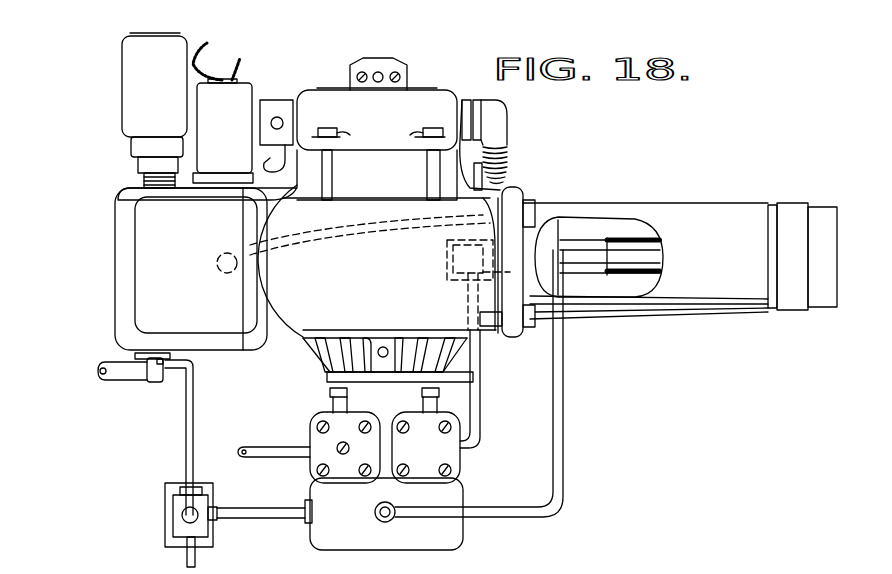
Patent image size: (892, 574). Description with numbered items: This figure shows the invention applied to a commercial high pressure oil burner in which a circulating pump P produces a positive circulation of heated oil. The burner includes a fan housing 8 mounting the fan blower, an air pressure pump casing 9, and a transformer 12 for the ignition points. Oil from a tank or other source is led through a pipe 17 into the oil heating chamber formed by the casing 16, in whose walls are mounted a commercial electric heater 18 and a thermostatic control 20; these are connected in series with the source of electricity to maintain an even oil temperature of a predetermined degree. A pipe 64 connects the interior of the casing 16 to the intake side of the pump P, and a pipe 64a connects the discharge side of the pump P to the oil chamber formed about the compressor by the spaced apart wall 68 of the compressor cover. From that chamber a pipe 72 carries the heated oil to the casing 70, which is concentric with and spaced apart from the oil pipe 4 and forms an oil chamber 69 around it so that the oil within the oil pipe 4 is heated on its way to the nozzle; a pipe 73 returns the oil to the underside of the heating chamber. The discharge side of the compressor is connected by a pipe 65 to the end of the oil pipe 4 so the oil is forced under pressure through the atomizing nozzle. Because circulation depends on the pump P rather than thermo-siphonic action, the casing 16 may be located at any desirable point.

The thermostatic control 20 is at (128, 82).
The electric heater 18 is at (243, 92).
The casing 16 is at (117, 257).
The transformer 12 is at (196, 265).
The fan housing 8 is at (323, 310).
The pipe 73 is at (338, 233).
The air pressure pump casing 9 is at (323, 363).
The casing 70 is at (577, 237).
The oil pipe 4 is at (627, 252).
The oil chamber 69 is at (617, 267).
The pipe 64 is at (265, 448).
The pipe 64a is at (243, 537).
The pipe 65 is at (482, 412).
The wall of compressor cover 68 is at (464, 488).
The pipe 72 is at (565, 440).
The circulating pump P is at (163, 505).
The pipe 17 is at (115, 373).